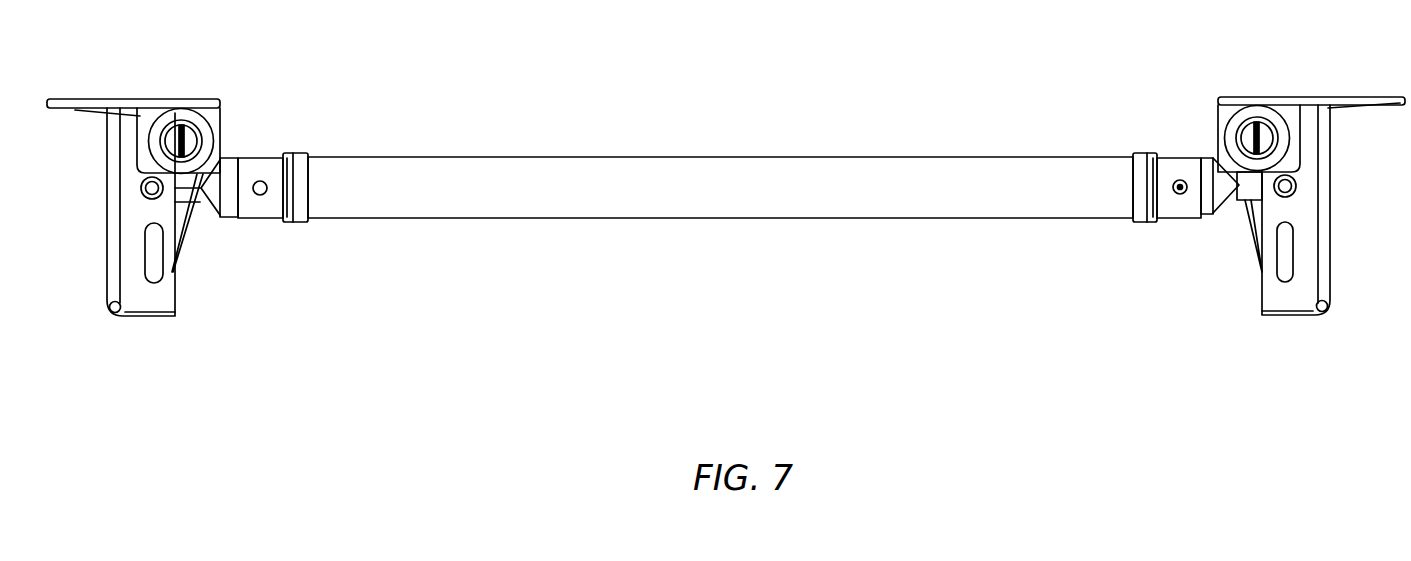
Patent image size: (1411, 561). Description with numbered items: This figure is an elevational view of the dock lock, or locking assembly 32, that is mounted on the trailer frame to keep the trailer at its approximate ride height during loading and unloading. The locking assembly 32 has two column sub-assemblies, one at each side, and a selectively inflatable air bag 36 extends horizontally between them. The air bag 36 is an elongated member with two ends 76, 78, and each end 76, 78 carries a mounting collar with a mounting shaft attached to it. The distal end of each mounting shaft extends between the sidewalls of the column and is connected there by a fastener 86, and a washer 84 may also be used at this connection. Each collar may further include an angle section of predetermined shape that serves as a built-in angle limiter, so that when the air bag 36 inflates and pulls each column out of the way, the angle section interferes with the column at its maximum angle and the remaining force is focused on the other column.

The locking assembly 32 is at (537, 342).
The air bag 36 is at (820, 220).
The end 76 is at (1218, 220).
The end 78 is at (218, 223).
The washer 84 is at (163, 202).
The fastener 86 is at (1277, 197).